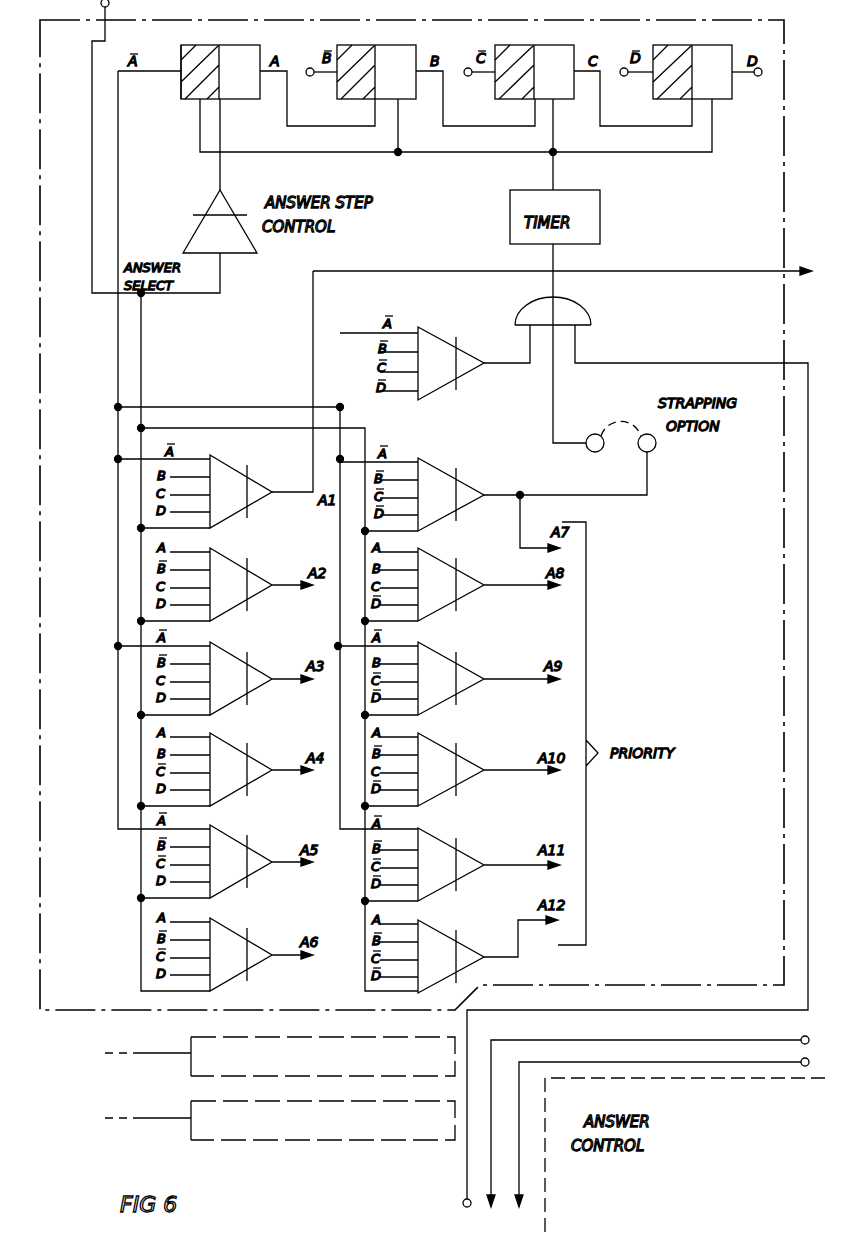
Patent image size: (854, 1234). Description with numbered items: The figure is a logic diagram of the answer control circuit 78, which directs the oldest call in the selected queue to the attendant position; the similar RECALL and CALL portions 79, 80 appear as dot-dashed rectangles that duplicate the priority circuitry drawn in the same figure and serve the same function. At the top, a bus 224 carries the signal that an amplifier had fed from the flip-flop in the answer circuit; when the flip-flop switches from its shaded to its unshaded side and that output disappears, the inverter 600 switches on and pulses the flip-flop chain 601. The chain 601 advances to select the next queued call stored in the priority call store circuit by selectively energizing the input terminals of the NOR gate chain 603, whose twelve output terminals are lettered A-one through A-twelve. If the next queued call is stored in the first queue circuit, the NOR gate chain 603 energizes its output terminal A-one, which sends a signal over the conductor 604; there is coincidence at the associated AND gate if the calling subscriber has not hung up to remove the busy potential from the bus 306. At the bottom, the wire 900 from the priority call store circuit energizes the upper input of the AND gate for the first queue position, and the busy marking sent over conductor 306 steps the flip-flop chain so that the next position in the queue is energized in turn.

The bus 224 is at (110, 6).
The flip-flop chain 601 is at (188, 109).
The inverter 600 is at (232, 258).
The conductor 604 is at (752, 266).
The NOR gate chain 603 is at (324, 458).
The answer control circuit 78 is at (702, 957).
The answer control circuit 79 is at (392, 1068).
The answer control circuit 80 is at (382, 1132).
The conductor 306 is at (730, 1060).
The wire 900 is at (480, 1122).